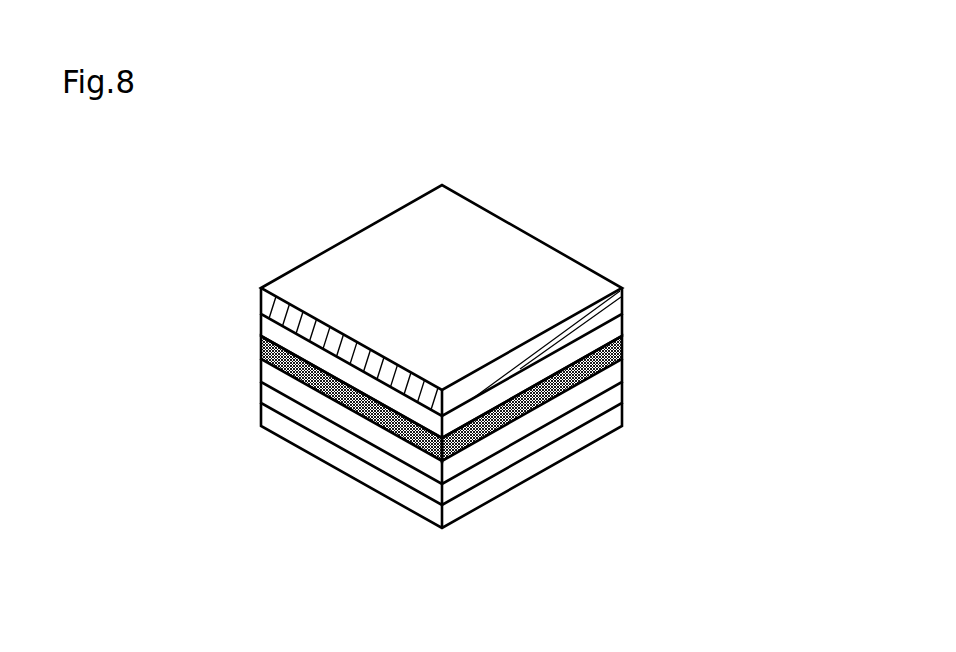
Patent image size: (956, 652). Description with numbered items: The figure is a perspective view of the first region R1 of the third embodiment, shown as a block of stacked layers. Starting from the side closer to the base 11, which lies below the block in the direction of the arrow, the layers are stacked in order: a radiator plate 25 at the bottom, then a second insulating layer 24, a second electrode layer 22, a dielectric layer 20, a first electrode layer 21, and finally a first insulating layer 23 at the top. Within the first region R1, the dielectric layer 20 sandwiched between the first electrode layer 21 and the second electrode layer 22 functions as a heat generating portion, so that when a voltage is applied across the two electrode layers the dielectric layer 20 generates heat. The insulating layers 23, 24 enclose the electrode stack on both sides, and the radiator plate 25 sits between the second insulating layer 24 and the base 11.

The first insulating layer 23 is at (574, 273).
The first electrode layer 21 is at (622, 320).
The dielectric layer 20 is at (622, 343).
The second electrode layer 22 is at (622, 368).
The second insulating layer 24 is at (622, 390).
The radiator plate 25 is at (585, 446).
The first region R1 is at (466, 230).
The base 11 is at (442, 553).